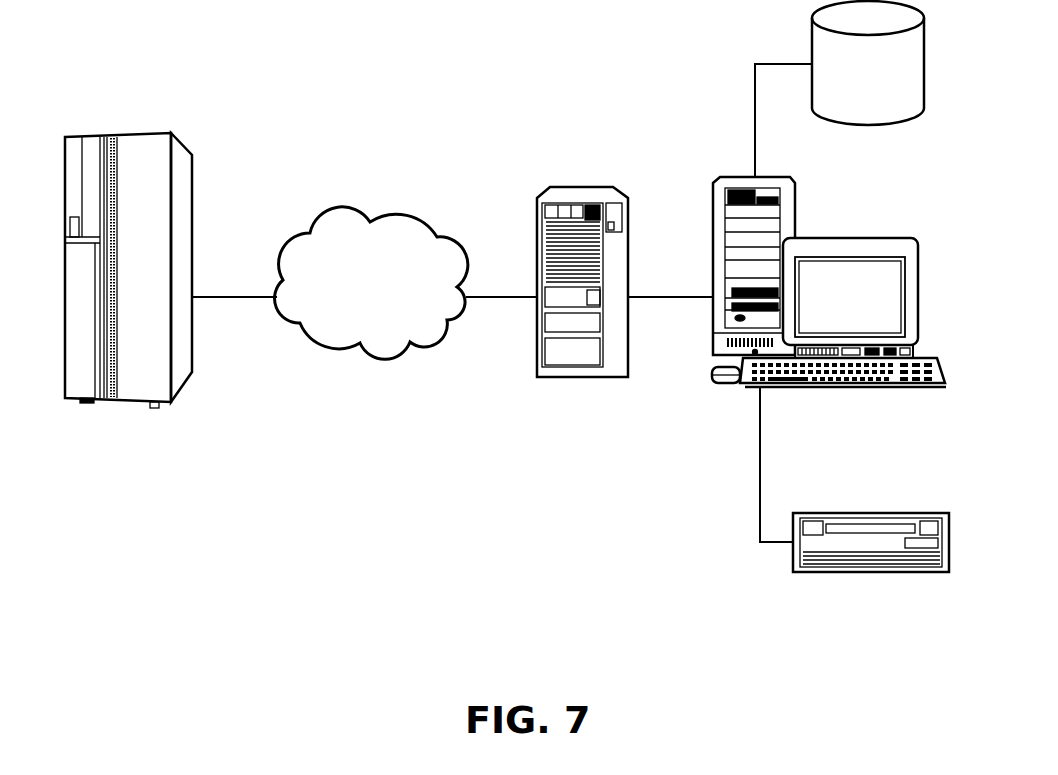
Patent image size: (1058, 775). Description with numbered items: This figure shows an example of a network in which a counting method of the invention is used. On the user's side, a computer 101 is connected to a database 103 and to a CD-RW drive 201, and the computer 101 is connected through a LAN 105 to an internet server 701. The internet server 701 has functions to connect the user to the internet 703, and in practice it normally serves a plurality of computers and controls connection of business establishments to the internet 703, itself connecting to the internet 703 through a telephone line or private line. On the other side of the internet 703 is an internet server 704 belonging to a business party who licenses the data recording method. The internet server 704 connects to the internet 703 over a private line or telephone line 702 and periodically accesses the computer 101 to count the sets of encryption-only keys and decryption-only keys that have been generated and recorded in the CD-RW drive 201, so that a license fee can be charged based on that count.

The computer 101 is at (832, 233).
The database 103 is at (888, 86).
The LAN 105 is at (672, 298).
The CD-RW drive 201 is at (873, 512).
The internet server 701 is at (580, 185).
The private line or telephone line 702 is at (232, 299).
The internet 703 is at (350, 309).
The internet server 704 is at (139, 142).